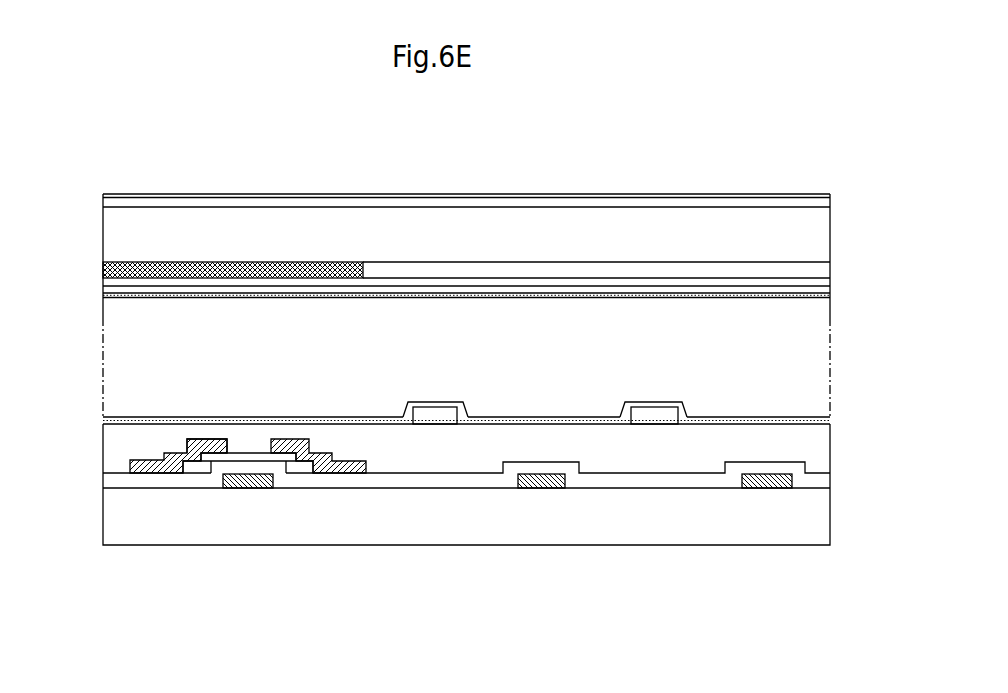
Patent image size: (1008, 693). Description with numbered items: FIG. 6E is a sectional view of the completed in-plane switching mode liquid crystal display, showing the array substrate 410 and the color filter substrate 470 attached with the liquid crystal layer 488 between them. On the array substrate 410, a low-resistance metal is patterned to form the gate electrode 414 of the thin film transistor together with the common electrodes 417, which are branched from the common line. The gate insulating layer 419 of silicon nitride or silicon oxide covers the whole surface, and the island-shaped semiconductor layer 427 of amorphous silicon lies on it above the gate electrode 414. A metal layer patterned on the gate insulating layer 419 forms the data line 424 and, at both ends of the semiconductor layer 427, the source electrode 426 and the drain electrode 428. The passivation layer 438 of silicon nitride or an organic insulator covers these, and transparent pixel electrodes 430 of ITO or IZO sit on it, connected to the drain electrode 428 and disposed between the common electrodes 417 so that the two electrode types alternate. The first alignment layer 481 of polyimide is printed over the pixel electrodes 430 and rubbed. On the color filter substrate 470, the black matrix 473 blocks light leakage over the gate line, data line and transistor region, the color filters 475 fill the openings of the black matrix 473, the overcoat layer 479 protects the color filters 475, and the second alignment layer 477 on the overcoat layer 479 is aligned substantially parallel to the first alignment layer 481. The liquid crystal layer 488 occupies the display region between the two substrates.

The array substrate 410 is at (783, 527).
The gate electrode 414 is at (248, 487).
The common electrodes 417 is at (770, 477).
The gate insulating layer 419 is at (825, 480).
The data line 424 is at (150, 462).
The source electrode 426 is at (210, 439).
The semiconductor layer 427 is at (193, 466).
The drain electrode 428 is at (296, 439).
The pixel electrodes 430 is at (654, 412).
The passivation layer 438 is at (813, 447).
The color filter substrate 470 is at (777, 220).
The black matrix 473 is at (248, 267).
The color filters 475 is at (510, 268).
The second alignment layer 477 is at (107, 296).
The overcoat layer 479 is at (108, 286).
The first alignment layer 481 is at (358, 416).
The liquid crystal layer 488 is at (815, 344).